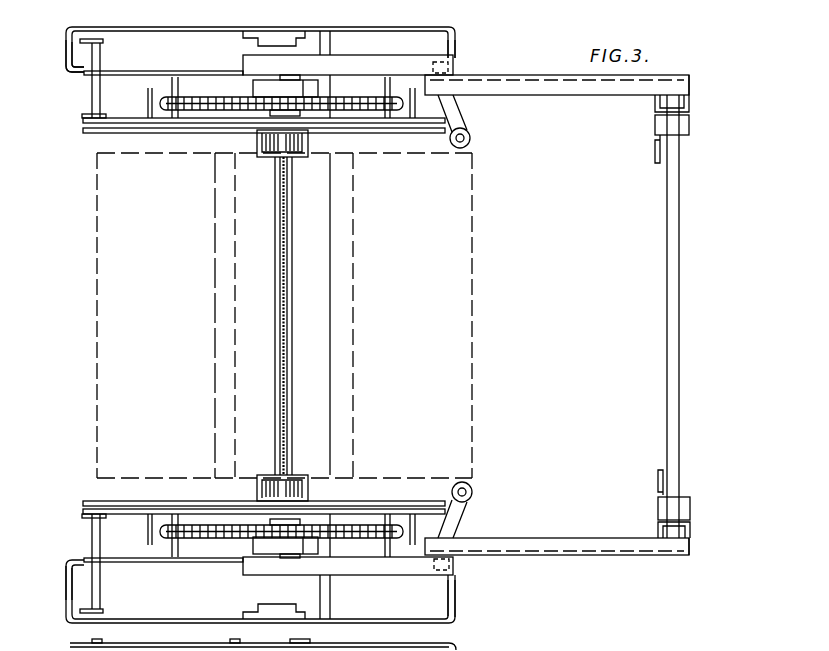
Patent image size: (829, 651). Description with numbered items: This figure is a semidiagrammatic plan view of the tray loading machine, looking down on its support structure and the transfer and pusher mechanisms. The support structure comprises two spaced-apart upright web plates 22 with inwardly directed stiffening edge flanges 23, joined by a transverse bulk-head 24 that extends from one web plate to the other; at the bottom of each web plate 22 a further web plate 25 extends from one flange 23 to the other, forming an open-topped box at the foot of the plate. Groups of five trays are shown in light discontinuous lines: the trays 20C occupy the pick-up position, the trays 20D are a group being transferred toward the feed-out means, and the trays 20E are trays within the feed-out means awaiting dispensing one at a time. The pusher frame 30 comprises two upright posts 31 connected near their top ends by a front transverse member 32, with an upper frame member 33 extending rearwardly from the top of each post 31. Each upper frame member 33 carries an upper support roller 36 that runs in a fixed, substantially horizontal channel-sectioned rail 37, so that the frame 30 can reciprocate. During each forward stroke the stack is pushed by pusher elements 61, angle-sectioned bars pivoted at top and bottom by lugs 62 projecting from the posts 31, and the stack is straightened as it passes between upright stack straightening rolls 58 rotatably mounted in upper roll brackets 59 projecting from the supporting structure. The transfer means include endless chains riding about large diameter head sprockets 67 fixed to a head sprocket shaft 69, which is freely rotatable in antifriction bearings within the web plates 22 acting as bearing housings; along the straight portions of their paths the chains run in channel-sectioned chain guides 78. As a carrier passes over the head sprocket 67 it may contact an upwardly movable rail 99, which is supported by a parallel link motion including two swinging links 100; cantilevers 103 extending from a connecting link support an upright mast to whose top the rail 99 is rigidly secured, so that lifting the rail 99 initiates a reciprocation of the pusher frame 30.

The trays in the C position 20C is at (474, 318).
The trays being transferred 20D is at (215, 247).
The trays within the feed-out means 20E is at (156, 315).
The web plate 22 is at (432, 30).
The edge flange 23 is at (66, 66).
The transverse bulk-head 24 is at (332, 242).
The further web plate 25 is at (128, 70).
The pusher frame 30 is at (584, 106).
The upright post 31 is at (690, 103).
The front transverse member 32 is at (680, 302).
The upper frame member 33 is at (553, 88).
The upper support roller 36 is at (450, 64).
The channel-sectioned rail 37 is at (375, 62).
The stack straightening roll 58 is at (469, 146).
The upper roll bracket 59 is at (455, 105).
The pusher element 61 is at (655, 150).
The lug 62 is at (690, 130).
The head sprocket 67 is at (220, 100).
The head sprocket shaft 69 is at (290, 327).
The chain guide 78 is at (100, 129).
The upwardly movable rail 99 is at (130, 133).
The swinging link 100 is at (201, 40).
The cantilever 103 is at (92, 95).